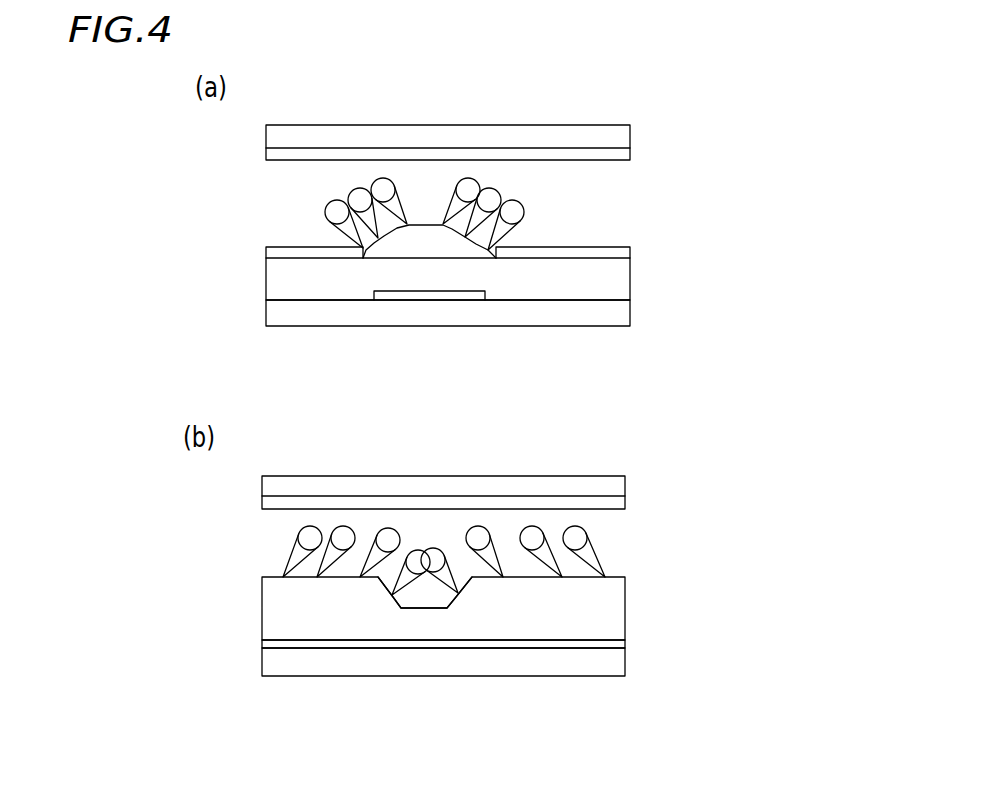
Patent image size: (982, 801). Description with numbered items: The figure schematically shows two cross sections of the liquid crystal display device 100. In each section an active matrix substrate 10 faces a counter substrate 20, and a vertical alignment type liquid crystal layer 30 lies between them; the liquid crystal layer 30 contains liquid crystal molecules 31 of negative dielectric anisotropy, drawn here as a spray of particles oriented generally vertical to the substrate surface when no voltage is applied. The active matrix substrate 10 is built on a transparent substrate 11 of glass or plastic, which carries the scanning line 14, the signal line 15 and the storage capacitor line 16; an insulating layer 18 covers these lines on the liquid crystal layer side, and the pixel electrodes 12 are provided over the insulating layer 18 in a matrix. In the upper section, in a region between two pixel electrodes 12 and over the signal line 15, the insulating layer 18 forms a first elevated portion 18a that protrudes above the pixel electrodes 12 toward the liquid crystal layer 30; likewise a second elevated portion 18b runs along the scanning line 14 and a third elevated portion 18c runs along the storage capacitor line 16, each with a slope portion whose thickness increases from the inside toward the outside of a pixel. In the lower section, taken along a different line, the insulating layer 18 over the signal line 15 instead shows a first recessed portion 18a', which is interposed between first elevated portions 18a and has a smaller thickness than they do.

The liquid crystal display device 100 is at (697, 128).
The active matrix substrate 10 is at (455, 494).
The transparent substrate 11 is at (529, 498).
The pixel electrode 12 is at (628, 258).
The scanning line 14 is at (527, 481).
The signal line 15 is at (527, 481).
The storage capacitor line 16 is at (440, 297).
The insulating layer 18 is at (425, 494).
The first elevated portion 18a is at (338, 432).
The second elevated portion 18b is at (338, 432).
The third elevated portion 18c is at (413, 243).
The first recessed portion 18a' is at (415, 670).
The counter substrate 20 is at (648, 130).
The vertical alignment type liquid crystal layer 30 is at (500, 386).
The liquid crystal molecule 31 is at (513, 210).